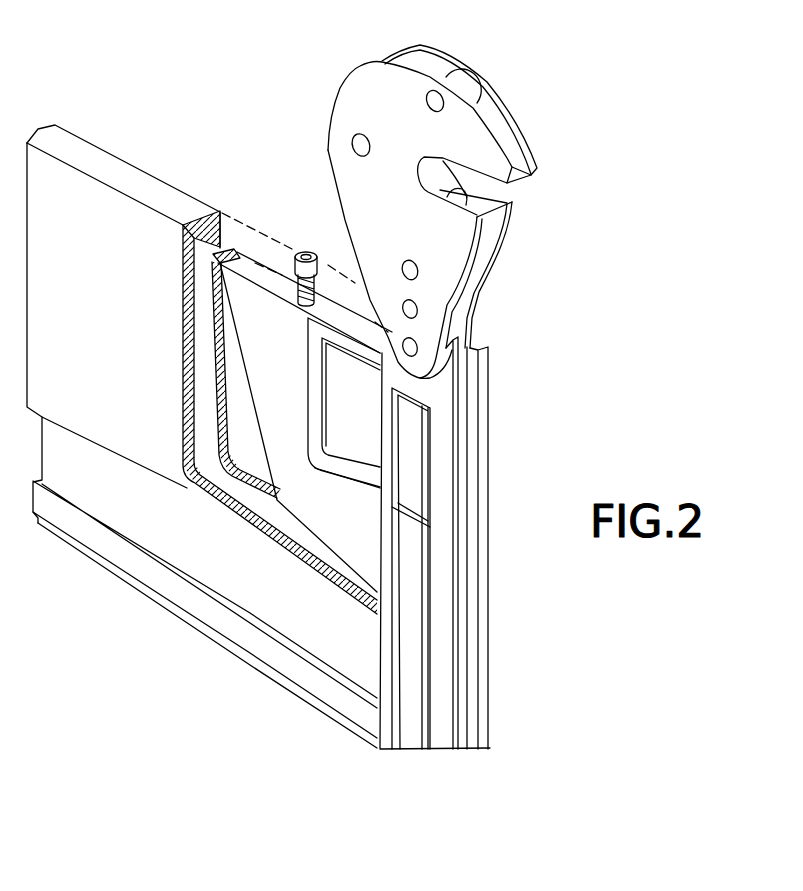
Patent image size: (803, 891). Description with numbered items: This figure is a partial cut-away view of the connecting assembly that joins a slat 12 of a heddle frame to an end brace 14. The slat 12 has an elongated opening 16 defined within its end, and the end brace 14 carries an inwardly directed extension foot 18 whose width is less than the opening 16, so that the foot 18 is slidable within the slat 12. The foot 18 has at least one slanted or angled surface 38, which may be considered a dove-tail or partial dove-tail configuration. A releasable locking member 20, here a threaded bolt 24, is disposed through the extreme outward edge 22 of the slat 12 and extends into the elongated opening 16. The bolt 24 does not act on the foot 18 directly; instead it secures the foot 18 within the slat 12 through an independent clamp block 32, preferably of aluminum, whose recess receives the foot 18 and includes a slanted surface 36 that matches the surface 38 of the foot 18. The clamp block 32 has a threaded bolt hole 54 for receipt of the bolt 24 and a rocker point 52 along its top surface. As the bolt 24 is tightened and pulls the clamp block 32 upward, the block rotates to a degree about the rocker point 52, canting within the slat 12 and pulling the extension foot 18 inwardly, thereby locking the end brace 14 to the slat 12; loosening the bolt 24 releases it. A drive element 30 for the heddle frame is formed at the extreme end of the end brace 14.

The slat 12 is at (82, 314).
The end brace 14 is at (490, 432).
The elongated opening 16 is at (197, 388).
The extension foot 18 is at (363, 403).
The releasable locking member 20 is at (304, 226).
The outward edge 22 is at (133, 180).
The threaded bolt 24 is at (312, 253).
The drive element 30 is at (514, 107).
The clamp block 32 is at (259, 398).
The slanted surface 36 is at (350, 480).
The slanted surface 38 is at (328, 458).
The rocker point 52 is at (229, 250).
The threaded bolt hole 54 is at (299, 304).